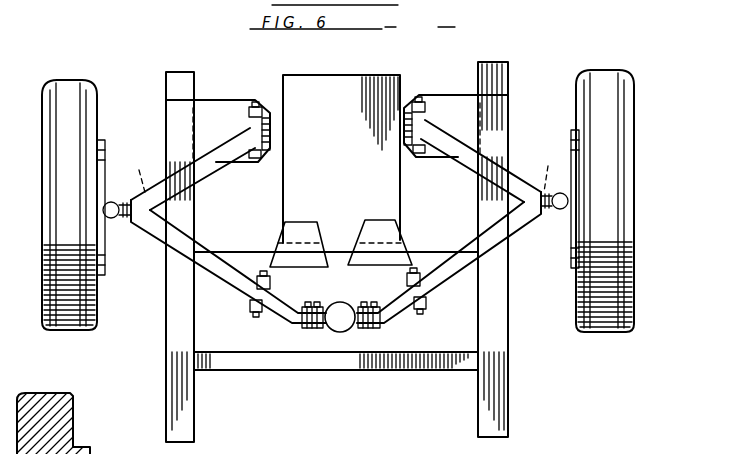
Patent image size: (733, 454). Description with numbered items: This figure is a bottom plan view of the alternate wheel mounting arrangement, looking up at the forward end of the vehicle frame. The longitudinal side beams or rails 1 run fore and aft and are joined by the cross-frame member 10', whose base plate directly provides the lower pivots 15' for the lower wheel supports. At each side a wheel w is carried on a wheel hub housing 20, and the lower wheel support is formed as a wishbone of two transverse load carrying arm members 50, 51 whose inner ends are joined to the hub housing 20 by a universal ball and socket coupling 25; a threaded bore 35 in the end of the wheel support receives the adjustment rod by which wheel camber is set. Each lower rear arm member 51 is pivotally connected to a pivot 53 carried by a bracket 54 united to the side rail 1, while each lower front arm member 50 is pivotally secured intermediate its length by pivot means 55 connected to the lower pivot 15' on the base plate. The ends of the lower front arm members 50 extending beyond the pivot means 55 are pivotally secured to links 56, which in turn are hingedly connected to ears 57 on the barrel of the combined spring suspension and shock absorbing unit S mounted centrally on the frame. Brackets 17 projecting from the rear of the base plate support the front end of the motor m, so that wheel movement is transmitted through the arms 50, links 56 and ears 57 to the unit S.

The wheel w is at (57, 132).
The wheel hub housing 20 is at (103, 148).
The universal ball and socket coupling 25 is at (115, 219).
The bore 35 is at (337, 171).
The longitudinal side beam 1 is at (178, 382).
The cross-frame member 10' is at (370, 311).
The bracket 54 is at (190, 110).
The pivot 53 is at (250, 110).
The lower rear arm member 51 is at (196, 184).
The lower front arm member 50 is at (202, 238).
The bracket 17 is at (280, 236).
The motor block m is at (341, 159).
The pivot means 55 is at (270, 283).
The lower pivot 15' is at (341, 309).
The ear 57 is at (351, 303).
The link 56 is at (314, 328).
The spring suspension and shock absorbing unit S is at (345, 330).